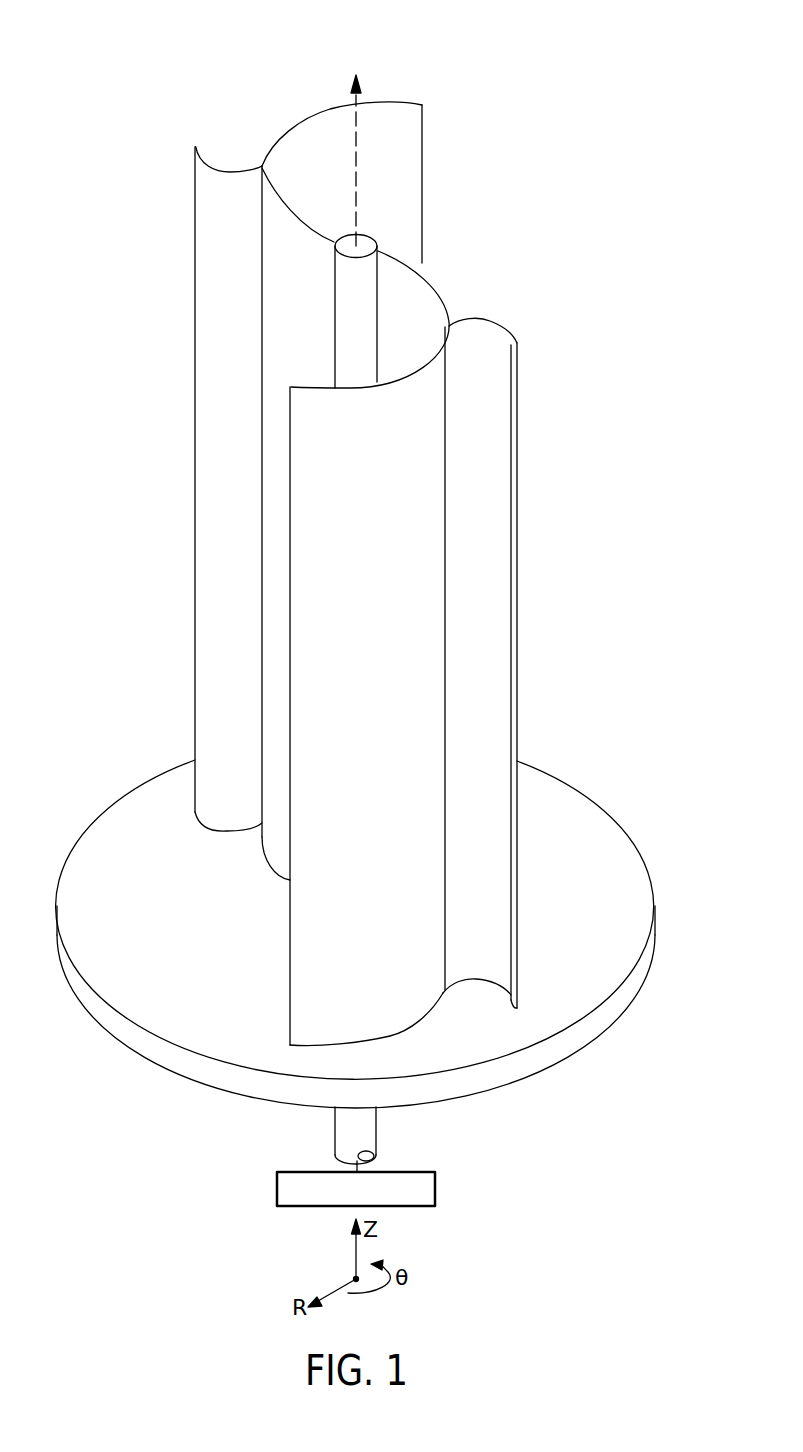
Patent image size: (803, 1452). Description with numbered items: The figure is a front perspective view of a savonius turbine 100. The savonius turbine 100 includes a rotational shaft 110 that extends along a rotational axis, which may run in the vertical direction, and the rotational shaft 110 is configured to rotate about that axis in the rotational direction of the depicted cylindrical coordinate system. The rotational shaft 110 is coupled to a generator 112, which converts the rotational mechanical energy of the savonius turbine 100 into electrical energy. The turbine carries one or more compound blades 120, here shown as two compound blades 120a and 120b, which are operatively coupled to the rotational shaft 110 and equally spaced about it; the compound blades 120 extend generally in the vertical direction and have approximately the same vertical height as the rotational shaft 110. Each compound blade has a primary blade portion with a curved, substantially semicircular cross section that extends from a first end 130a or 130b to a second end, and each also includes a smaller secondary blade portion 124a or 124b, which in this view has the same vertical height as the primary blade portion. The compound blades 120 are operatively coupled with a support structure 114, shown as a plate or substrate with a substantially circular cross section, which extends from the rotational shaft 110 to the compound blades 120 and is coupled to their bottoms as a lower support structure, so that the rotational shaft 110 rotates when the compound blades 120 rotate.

The savonius turbine 100 is at (619, 106).
The rotational shaft 110 is at (368, 245).
The generator 112 is at (436, 1188).
The support structure 114 is at (583, 807).
The compound blades 120 is at (461, 303).
The compound blade 120a is at (429, 619).
The compound blade 120b is at (314, 485).
The secondary blade portion 124a is at (517, 548).
The secondary blade portion 124b is at (197, 345).
The first end 130a is at (291, 684).
The first end 130b is at (422, 177).